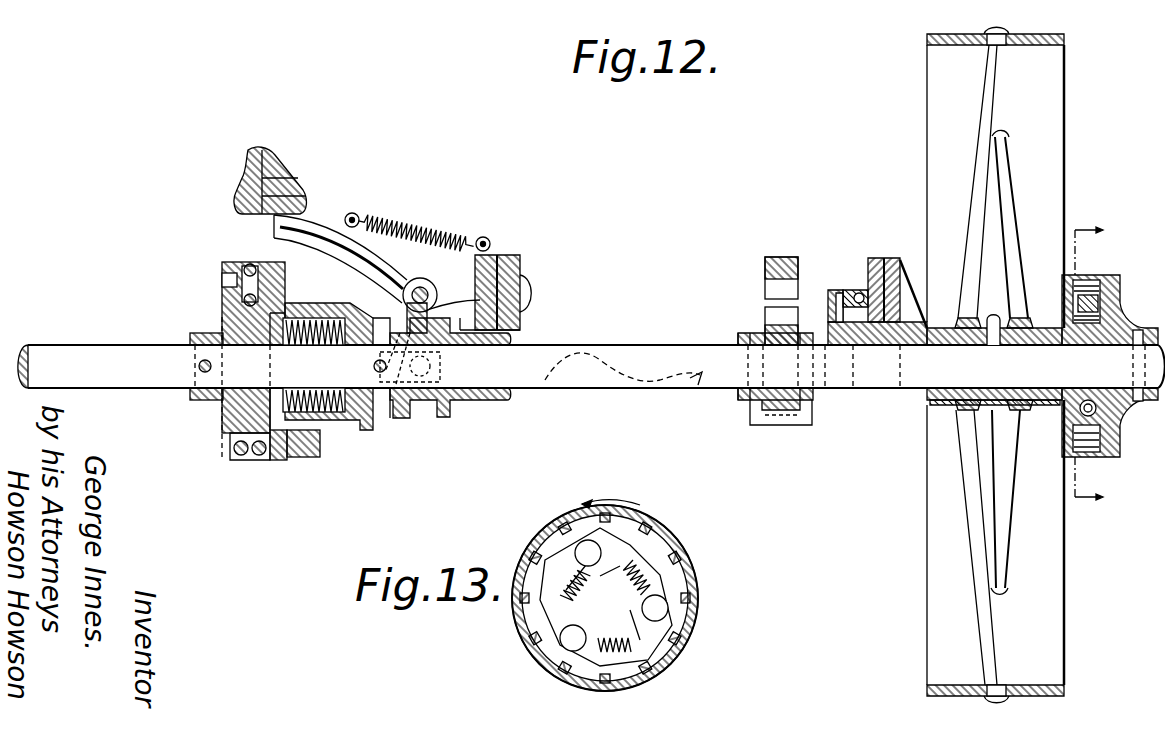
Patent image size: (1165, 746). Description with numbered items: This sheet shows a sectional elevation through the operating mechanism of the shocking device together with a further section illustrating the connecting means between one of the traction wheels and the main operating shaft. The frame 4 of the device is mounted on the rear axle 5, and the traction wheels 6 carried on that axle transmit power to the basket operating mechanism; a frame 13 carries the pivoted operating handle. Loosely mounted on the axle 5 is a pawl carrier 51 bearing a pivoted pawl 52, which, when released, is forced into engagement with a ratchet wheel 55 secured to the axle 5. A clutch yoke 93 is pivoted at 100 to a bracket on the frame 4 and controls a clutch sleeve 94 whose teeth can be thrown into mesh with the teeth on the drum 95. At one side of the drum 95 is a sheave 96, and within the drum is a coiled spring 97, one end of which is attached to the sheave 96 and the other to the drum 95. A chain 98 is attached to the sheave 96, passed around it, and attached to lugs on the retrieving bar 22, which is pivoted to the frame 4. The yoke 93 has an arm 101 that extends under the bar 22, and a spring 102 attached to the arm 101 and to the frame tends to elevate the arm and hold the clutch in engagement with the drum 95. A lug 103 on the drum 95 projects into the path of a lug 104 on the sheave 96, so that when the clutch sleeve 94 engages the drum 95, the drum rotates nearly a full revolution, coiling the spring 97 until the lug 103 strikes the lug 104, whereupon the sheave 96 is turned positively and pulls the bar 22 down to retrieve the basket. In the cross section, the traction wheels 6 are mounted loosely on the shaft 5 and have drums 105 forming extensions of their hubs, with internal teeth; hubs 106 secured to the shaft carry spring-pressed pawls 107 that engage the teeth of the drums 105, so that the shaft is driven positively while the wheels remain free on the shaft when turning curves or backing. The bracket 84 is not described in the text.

In FIG. 12, the frame 4 is at (500, 262).
In FIG. 12, the rear axle 5 is at (175, 378).
In FIG. 13, the rear axle 5 is at (612, 598).
In FIG. 12, the traction wheels 6 is at (1052, 104).
In FIG. 12, the frame 13 is at (1105, 365).
In FIG. 12, the retrieving bar 22 is at (240, 180).
In FIG. 12, the pawl carrier 51 is at (738, 398).
In FIG. 12, the pawl 52 is at (765, 270).
In FIG. 12, the ratchet wheel 55 is at (765, 316).
In FIG. 12, the bracket 84 is at (755, 425).
In FIG. 12, the clutch yoke 93 is at (412, 300).
In FIG. 12, the clutch sleeve 94 is at (450, 400).
In FIG. 12, the drum 95 is at (318, 305).
In FIG. 12, the sheave 96 is at (228, 420).
In FIG. 12, the coiled spring 97 is at (315, 330).
In FIG. 12, the chain 98 is at (255, 460).
In FIG. 12, the pivot 100 is at (423, 291).
In FIG. 12, the arm 101 is at (274, 226).
In FIG. 12, the spring 102 is at (403, 224).
In FIG. 12, the lug 103 is at (320, 450).
In FIG. 12, the lug 104 is at (280, 460).
In FIG. 12, the drums 105 is at (1078, 285).
In FIG. 13, the drums 105 is at (660, 535).
In FIG. 12, the hubs 106 is at (1108, 420).
In FIG. 13, the hubs 106 is at (665, 590).
In FIG. 12, the pawls 107 is at (1100, 300).
In FIG. 13, the pawls 107 is at (590, 540).